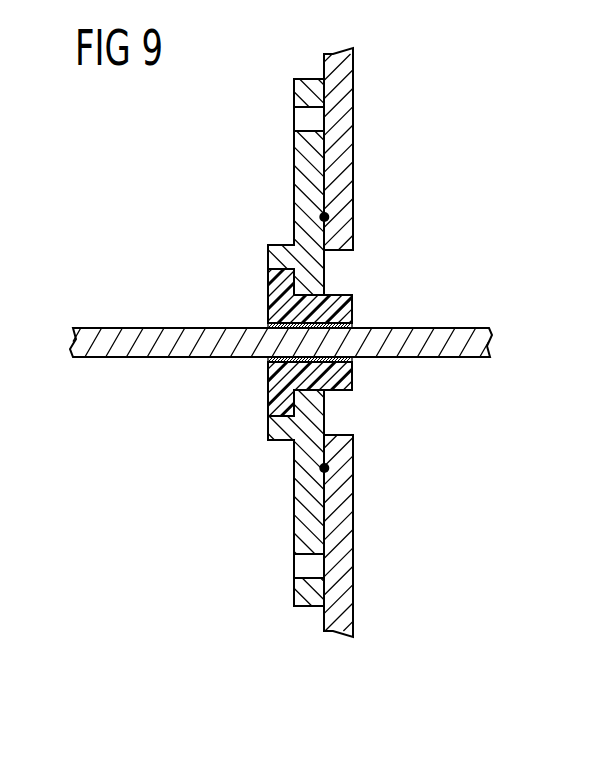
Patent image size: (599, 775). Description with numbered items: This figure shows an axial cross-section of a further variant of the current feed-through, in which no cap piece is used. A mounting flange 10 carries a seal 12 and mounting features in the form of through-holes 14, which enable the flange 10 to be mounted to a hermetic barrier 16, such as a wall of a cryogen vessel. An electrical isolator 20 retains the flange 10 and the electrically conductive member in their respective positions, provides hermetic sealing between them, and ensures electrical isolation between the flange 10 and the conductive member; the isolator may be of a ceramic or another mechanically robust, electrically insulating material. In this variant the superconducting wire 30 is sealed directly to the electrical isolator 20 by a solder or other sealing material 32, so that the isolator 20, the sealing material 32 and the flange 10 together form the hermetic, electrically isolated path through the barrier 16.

The mounting flange 10 is at (303, 195).
The seal 12 is at (331, 217).
The through-holes 14 is at (302, 120).
The hermetic barrier 16 is at (343, 148).
The electrical isolator 20 is at (272, 297).
The support plate 30 is at (458, 342).
The sealing material 32 is at (338, 362).